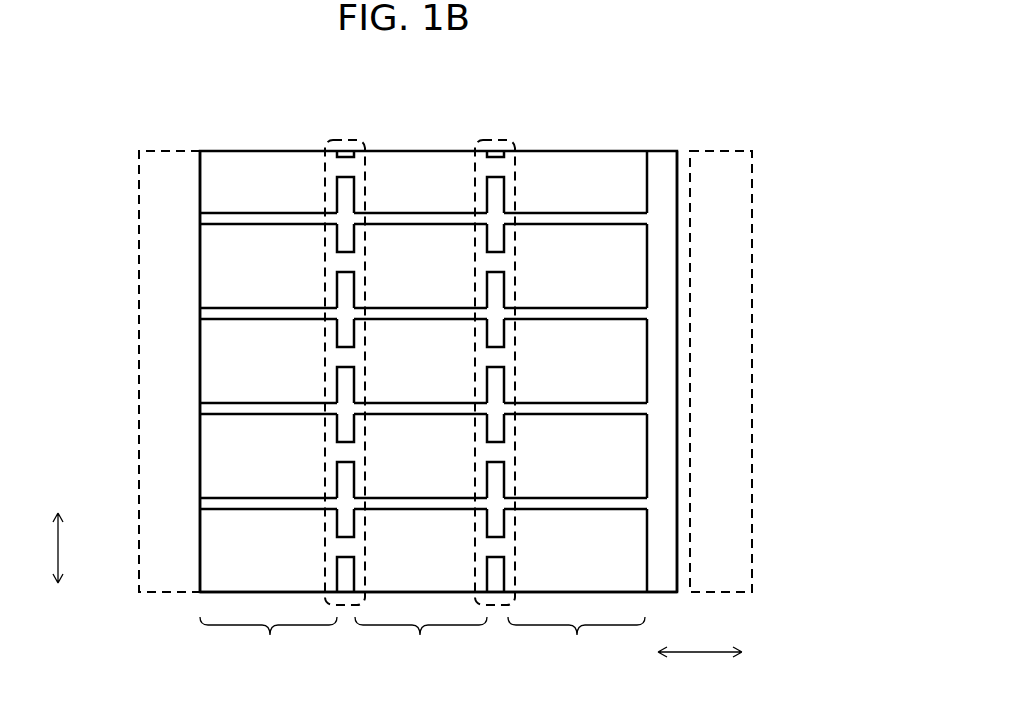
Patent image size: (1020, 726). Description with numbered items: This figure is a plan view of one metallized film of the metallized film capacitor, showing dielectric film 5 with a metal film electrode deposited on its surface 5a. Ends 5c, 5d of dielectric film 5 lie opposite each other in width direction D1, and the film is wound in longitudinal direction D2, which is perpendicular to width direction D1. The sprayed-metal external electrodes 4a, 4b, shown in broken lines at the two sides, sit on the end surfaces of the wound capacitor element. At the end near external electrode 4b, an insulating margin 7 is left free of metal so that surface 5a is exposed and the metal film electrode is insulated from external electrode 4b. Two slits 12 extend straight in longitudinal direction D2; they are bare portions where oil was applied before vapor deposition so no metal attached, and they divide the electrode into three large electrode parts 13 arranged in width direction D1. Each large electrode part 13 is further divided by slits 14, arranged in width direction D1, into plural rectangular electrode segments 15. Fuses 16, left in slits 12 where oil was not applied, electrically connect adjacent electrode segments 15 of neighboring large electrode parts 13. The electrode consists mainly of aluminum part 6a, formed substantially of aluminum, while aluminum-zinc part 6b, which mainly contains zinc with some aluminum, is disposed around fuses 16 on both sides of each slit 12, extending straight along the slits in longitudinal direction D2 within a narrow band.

The external electrode 4a is at (141, 167).
The external electrode 4b is at (730, 160).
The dielectric film 5 is at (660, 149).
The surface 5a is at (671, 172).
The end 5c is at (200, 191).
The end 5d is at (678, 530).
The aluminum part 6a is at (420, 182).
The aluminum-zinc part 6b is at (323, 293).
The insulating margin 7 is at (655, 277).
The slit 12 is at (494, 582).
The large electrode part 13 is at (422, 642).
The slit 14 is at (624, 219).
The electrode segment 15 is at (623, 358).
The fuse 16 is at (345, 461).
The width direction D1 is at (700, 653).
The longitudinal direction D2 is at (60, 543).